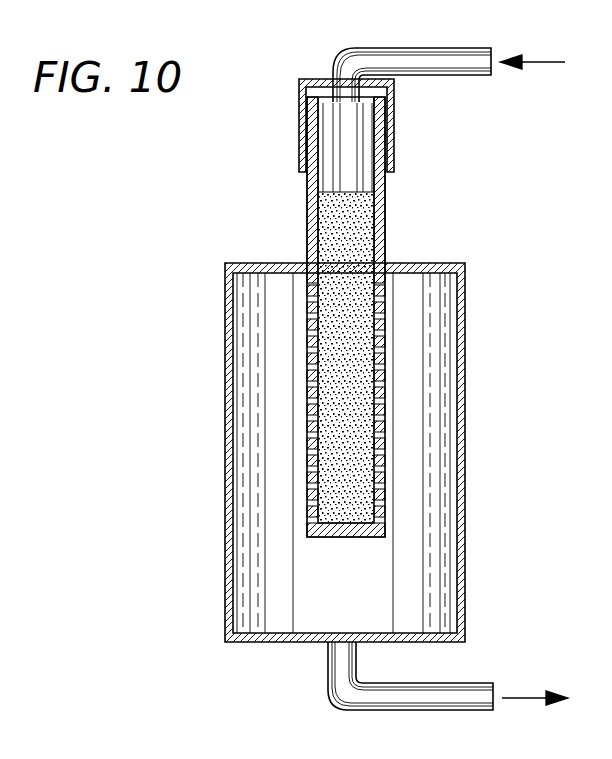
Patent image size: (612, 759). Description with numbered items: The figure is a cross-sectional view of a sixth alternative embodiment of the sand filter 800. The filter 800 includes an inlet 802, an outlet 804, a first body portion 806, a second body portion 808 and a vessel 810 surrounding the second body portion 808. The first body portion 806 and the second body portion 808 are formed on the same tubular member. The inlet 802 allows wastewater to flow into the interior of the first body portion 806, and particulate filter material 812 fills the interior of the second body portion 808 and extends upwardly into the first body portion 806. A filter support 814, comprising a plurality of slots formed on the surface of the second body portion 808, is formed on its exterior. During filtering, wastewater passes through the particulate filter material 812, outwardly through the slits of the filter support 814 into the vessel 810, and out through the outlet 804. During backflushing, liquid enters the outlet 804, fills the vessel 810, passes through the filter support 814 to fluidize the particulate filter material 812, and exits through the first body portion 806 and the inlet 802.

The sand filter 800 is at (442, 238).
The inlet 802 is at (334, 52).
The outlet 804 is at (330, 688).
The first body portion 806 is at (385, 202).
The second body portion 808 is at (383, 390).
The vessel 810 is at (460, 547).
The particulate filter material 812 is at (328, 210).
The filter support 814 is at (306, 427).